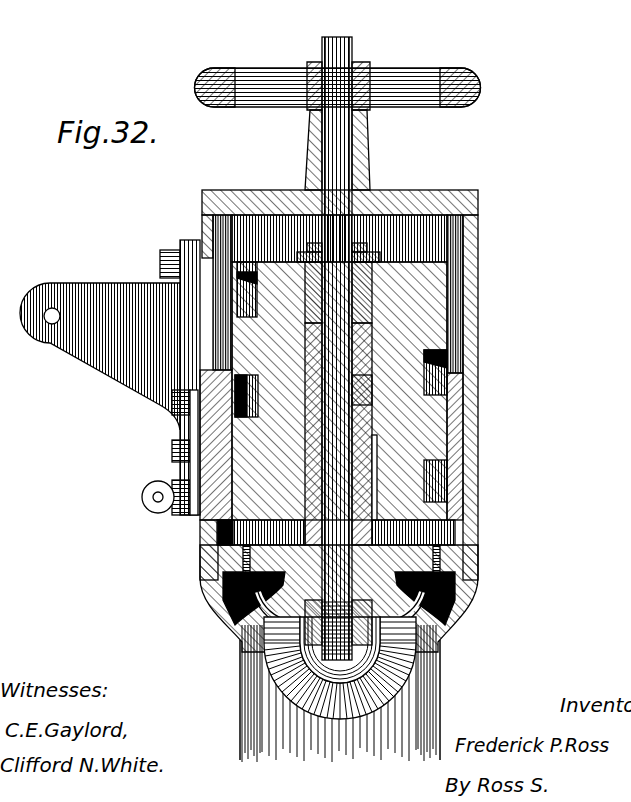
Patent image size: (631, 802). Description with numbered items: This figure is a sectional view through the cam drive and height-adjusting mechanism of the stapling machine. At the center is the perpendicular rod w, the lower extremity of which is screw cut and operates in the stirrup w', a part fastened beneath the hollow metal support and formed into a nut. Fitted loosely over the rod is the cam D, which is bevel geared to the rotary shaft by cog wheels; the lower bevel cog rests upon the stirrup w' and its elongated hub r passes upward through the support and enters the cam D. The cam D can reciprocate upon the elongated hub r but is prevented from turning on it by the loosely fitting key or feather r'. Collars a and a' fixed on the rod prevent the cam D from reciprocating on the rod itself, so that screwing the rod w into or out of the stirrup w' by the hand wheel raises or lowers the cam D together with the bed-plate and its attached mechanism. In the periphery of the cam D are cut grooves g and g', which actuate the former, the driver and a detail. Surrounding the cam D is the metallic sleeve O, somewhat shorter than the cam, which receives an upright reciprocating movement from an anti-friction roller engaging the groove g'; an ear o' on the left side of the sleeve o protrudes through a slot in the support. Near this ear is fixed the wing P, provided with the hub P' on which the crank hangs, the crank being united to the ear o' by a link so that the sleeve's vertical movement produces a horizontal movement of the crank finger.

The perpendicular rod w is at (337, 334).
The stirrup w' is at (343, 634).
The groove g' is at (341, 328).
The groove g is at (376, 438).
The collar a is at (338, 283).
The collar a' is at (377, 390).
The cam D is at (339, 403).
The bevel cog D' is at (361, 681).
The sleeve O is at (455, 425).
The sleeve o is at (180, 346).
The ear o' is at (176, 452).
The wing P is at (110, 377).
The hub P' is at (72, 315).
The elongated hub r is at (336, 532).
The key or feather r' is at (389, 477).